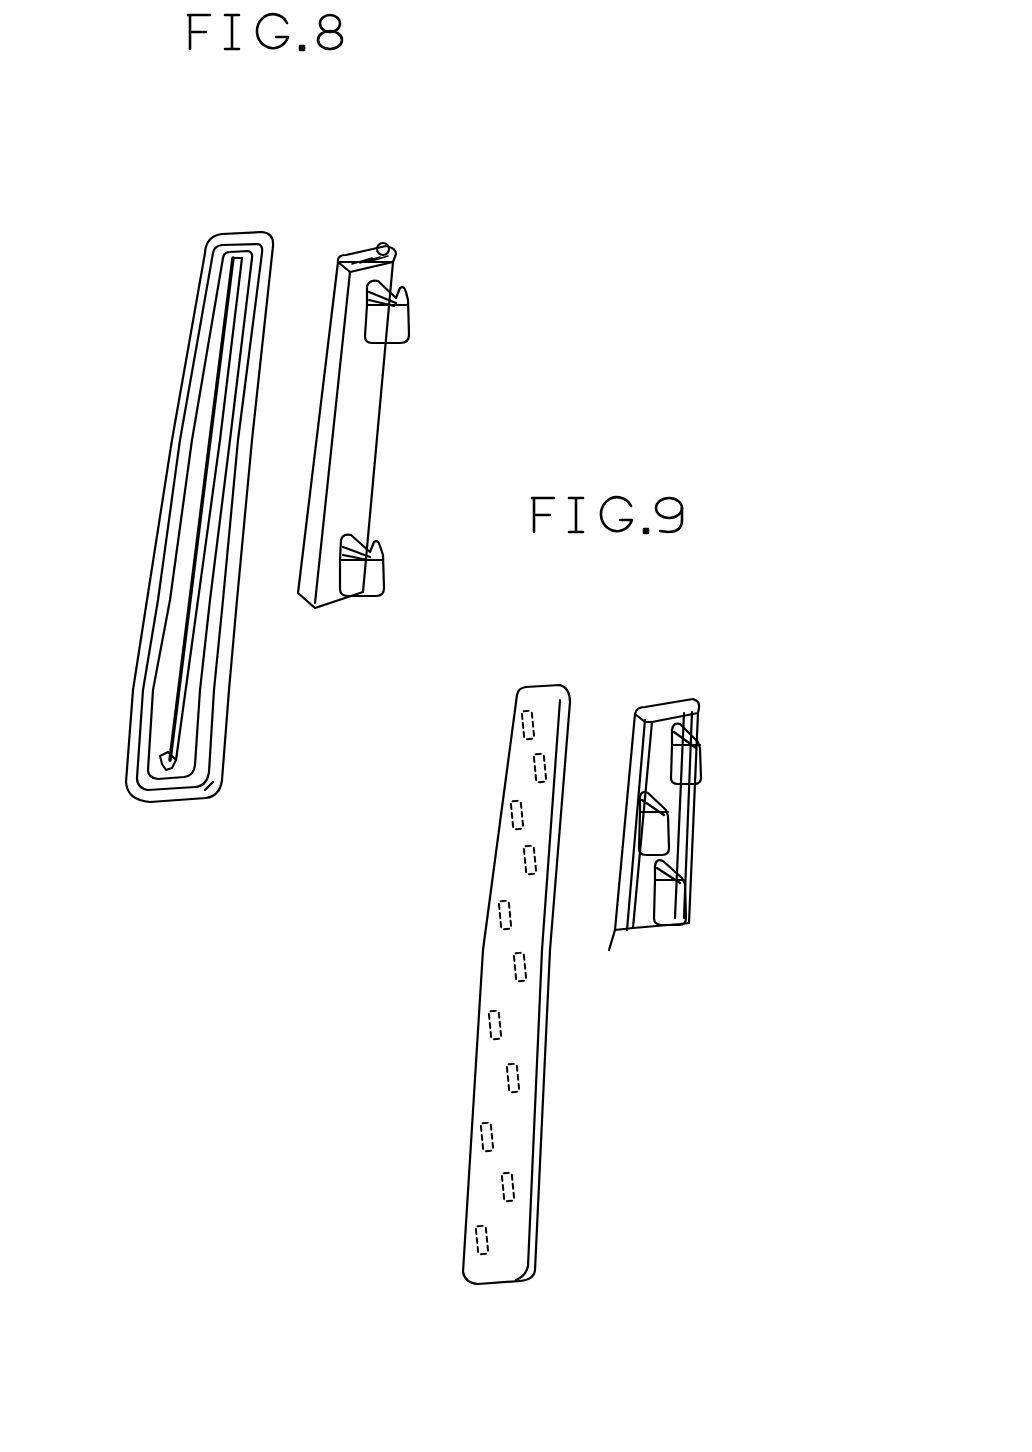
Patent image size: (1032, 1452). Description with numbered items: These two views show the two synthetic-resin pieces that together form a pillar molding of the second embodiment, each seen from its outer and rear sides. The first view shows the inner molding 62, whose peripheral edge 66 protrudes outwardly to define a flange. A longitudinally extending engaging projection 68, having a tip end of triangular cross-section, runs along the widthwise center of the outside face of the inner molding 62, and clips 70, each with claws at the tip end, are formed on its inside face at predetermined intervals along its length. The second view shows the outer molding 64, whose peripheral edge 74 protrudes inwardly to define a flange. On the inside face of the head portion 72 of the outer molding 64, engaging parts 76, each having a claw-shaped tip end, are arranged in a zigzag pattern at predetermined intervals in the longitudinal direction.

In FIG. 8, the inner molding 62 is at (266, 240).
In FIG. 9, the outer molding 64 is at (565, 690).
In FIG. 8, the peripheral edge 66 is at (396, 256).
In FIG. 8, the engaging projection 68 is at (178, 617).
In FIG. 8, the clips 70 is at (404, 330).
In FIG. 9, the head portion 72 is at (688, 702).
In FIG. 9, the peripheral edge 74 is at (608, 940).
In FIG. 9, the engaging parts 76 is at (700, 760).